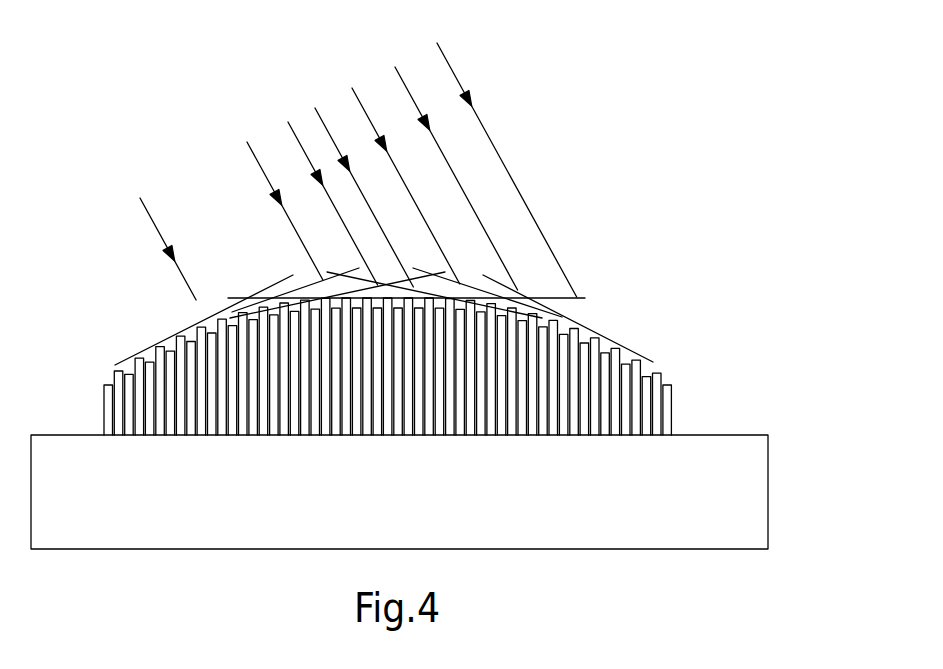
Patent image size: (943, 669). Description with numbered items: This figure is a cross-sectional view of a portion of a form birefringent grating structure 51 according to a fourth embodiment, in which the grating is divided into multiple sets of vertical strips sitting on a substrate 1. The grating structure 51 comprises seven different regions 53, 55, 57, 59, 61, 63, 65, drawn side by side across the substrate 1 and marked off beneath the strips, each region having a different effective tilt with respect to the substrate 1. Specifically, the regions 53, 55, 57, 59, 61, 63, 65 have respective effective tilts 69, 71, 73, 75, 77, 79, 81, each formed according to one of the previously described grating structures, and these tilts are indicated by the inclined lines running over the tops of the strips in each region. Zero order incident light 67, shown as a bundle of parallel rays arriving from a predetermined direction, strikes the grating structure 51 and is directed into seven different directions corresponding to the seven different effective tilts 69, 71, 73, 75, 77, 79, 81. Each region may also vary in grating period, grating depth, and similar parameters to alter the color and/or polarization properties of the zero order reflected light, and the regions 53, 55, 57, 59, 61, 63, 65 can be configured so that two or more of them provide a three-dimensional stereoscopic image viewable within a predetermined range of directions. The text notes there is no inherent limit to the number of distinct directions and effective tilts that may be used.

The substrate 1 is at (768, 470).
The grating structure 51 is at (712, 98).
The first region 53 is at (103, 448).
The second region 55 is at (265, 448).
The third region 57 is at (345, 448).
The fourth region 59 is at (425, 448).
The fifth region 61 is at (505, 448).
The sixth region 63 is at (585, 448).
The seventh region 65 is at (665, 448).
The zero order incident light 67 is at (322, 8).
The effective tilt of first region 69 is at (190, 327).
The effective tilt of second region 71 is at (233, 298).
The effective tilt of third region 73 is at (282, 305).
The effective tilt of fourth region 75 is at (583, 297).
The effective tilt of fifth region 77 is at (483, 275).
The effective tilt of sixth region 79 is at (567, 312).
The effective tilt of seventh region 81 is at (653, 362).